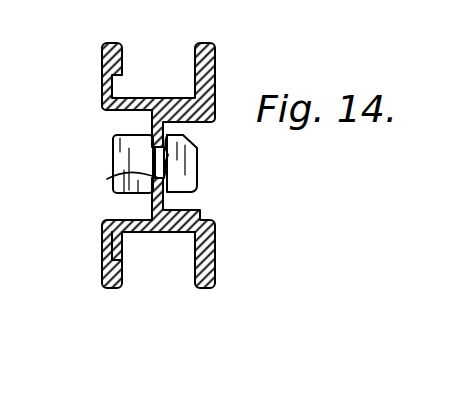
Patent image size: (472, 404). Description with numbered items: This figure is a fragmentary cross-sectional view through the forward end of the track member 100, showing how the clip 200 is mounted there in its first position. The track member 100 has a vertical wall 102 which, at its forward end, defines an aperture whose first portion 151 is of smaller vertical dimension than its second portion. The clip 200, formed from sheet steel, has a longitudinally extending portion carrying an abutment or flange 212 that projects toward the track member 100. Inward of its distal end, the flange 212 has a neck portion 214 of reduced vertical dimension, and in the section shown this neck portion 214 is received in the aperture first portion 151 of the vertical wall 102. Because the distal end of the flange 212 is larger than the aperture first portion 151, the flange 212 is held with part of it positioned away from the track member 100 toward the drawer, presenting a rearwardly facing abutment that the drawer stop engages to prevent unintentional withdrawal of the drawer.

The track member 100 is at (224, 72).
The vertical wall 102 is at (163, 206).
The clip 200 is at (140, 153).
The flange 212 is at (127, 131).
The neck portion 214 is at (168, 163).
The aperture first portion 151 is at (107, 179).